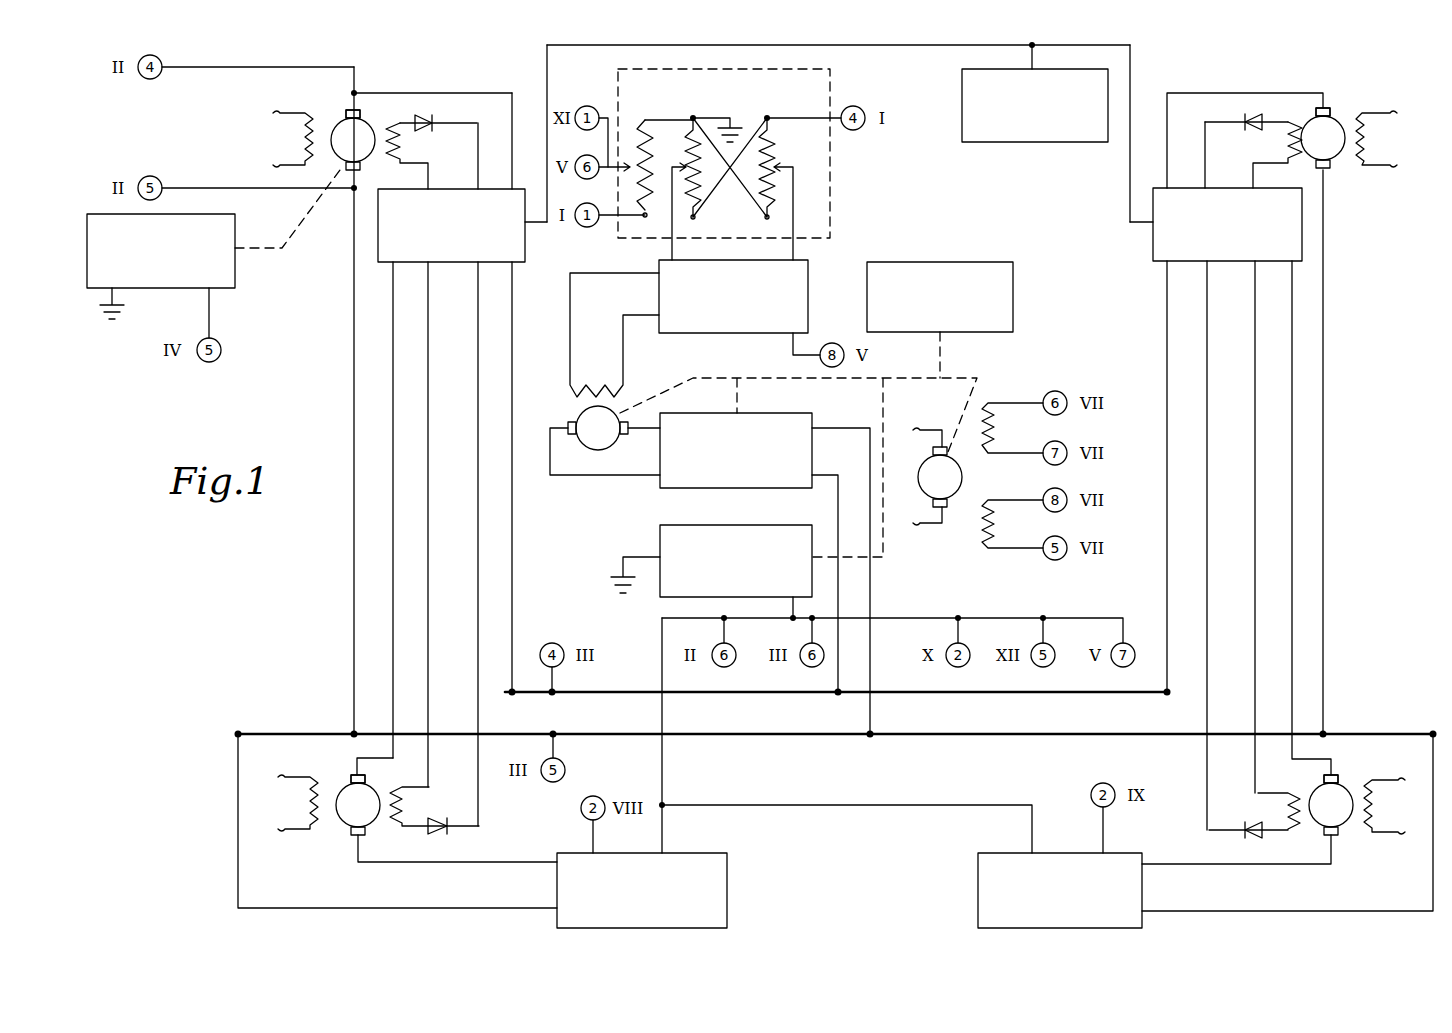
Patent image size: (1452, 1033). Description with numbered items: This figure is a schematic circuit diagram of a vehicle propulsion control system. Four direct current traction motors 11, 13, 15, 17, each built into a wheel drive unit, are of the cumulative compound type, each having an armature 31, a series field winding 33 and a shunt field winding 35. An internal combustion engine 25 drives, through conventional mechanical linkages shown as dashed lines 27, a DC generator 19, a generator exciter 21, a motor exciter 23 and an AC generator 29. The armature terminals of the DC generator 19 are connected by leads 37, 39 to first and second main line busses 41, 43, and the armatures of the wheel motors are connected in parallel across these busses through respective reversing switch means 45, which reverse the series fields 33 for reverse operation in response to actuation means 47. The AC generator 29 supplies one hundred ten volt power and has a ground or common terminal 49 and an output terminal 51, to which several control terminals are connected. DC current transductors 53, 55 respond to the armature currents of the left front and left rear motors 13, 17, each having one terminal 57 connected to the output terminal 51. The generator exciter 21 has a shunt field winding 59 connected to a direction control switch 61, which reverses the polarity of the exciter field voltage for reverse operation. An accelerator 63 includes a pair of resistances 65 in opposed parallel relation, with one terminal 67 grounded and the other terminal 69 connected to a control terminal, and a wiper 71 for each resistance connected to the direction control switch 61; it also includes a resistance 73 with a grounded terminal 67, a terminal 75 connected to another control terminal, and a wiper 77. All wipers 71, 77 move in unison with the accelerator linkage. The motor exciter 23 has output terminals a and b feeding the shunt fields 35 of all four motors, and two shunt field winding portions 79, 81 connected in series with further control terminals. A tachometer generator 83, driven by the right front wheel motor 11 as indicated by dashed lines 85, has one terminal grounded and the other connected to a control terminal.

The traction motor 11 is at (384, 183).
The traction motor 13 is at (343, 825).
The traction motor 15 is at (1338, 158).
The traction motor 17 is at (1322, 786).
The DC generator 19 is at (697, 488).
The generator exciter 21 is at (578, 416).
The motor exciter 23 is at (987, 475).
The internal combustion engine 25 is at (1013, 292).
The mechanical linkages 27 is at (852, 378).
The AC generator 29 is at (752, 525).
The armature 31 is at (345, 127).
The series field winding 33 is at (406, 150).
The shunt field winding 35 is at (1387, 808).
The lead 37 is at (870, 590).
The lead 39 is at (838, 492).
The first main line bus 41 is at (1044, 734).
The second main line bus 43 is at (985, 692).
The reversing switch means 45 is at (455, 262).
The actuation means 47 is at (1034, 142).
The ground or common terminal 49 is at (625, 556).
The output terminal 51 is at (793, 618).
The DC current transductor 53 is at (727, 880).
The DC current transductor 55 is at (978, 880).
The terminal 57 is at (662, 805).
The shunt field winding 59 is at (596, 385).
The direction control switch 61 is at (808, 285).
The accelerator 63 is at (878, 169).
The resistances 65 is at (705, 192).
The terminal 67 is at (695, 116).
The terminal 69 is at (772, 124).
The wiper 71 is at (682, 150).
The resistance 73 is at (640, 199).
The terminal 75 is at (643, 218).
The wiper 77 is at (608, 153).
The shunt field winding portion 79 is at (990, 432).
The shunt field winding portion 81 is at (992, 526).
The tachometer generator 83 is at (171, 288).
The dashed lines 85 is at (298, 234).